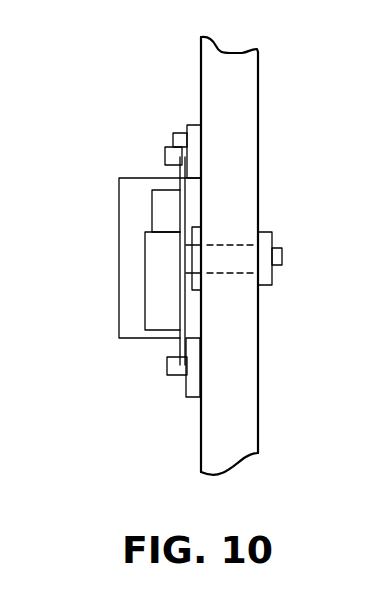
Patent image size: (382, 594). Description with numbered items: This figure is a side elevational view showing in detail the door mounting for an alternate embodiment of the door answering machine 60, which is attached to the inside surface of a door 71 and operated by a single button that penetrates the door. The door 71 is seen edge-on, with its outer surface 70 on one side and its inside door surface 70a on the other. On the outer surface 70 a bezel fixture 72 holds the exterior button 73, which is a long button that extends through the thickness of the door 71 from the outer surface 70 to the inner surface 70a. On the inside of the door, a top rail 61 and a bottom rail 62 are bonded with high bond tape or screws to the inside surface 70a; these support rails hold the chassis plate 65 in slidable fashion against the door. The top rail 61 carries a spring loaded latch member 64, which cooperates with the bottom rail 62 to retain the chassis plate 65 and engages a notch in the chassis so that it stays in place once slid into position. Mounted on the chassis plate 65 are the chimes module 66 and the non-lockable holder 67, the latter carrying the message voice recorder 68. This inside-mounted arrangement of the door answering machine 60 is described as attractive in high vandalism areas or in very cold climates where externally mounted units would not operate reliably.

The door answering machine 60 is at (182, 245).
The top rail 61 is at (167, 157).
The bottom rail 62 is at (167, 372).
The spring loaded latch member 64 is at (177, 137).
The chassis plate 65 is at (190, 312).
The chimes module 66 is at (124, 190).
The non-lockable holder 67 is at (158, 296).
The message voice recorder 68 is at (162, 207).
The outer surface 70 is at (215, 249).
The inside door surface 70a is at (201, 443).
The door 71 is at (212, 58).
The bezel fixture 72 is at (268, 232).
The button 73 is at (282, 256).